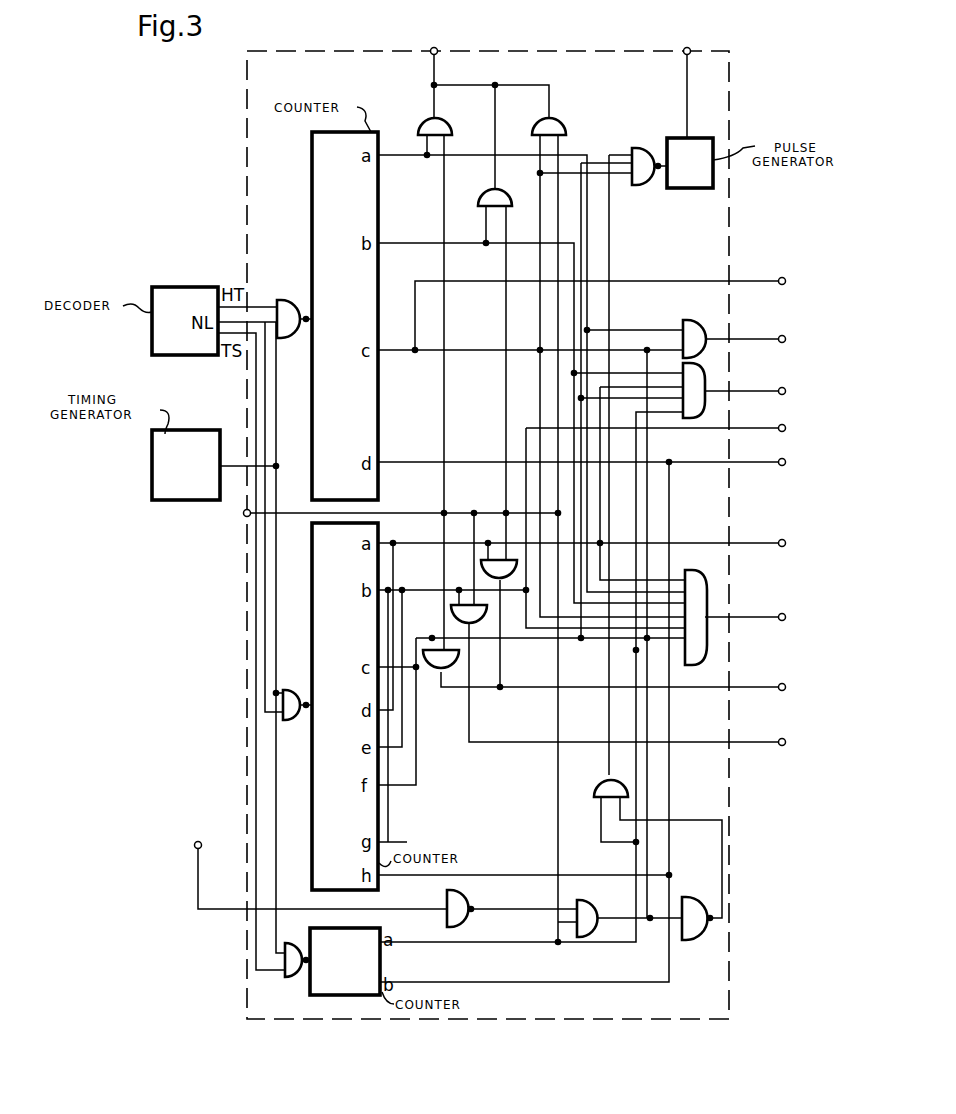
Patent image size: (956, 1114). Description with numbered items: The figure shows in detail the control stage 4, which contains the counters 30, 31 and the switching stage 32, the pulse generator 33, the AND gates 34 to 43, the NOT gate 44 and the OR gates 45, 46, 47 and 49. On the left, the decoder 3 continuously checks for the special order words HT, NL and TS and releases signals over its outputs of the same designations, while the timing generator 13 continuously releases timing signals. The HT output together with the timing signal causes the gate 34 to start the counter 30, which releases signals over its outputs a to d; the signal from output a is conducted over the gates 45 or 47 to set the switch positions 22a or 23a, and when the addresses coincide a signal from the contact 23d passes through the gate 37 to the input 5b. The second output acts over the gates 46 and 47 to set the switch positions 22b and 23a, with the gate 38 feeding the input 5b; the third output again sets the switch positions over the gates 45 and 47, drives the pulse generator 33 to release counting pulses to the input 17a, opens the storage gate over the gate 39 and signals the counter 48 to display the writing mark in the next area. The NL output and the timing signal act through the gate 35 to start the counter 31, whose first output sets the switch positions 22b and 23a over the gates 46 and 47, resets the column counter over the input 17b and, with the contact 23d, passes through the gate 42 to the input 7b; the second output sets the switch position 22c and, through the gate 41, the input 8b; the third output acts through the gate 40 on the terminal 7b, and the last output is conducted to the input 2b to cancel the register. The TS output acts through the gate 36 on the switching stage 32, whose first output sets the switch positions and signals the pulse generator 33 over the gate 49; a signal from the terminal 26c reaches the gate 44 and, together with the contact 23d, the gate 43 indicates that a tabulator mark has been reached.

The decoder 3 is at (185, 309).
The control stage 4 is at (729, 95).
The timing generator 13 is at (186, 465).
The counter 30 is at (345, 316).
The counter 31 is at (345, 706).
The switching stage 32 is at (345, 961).
The pulse generator 33 is at (690, 163).
The AND gate 34 is at (285, 308).
The AND gate 35 is at (290, 693).
The AND gate 36 is at (286, 974).
The AND gate 37 is at (447, 127).
The AND gate 38 is at (507, 198).
The AND gate 39 is at (561, 127).
The AND gate 40 is at (456, 660).
The AND gate 41 is at (486, 614).
The AND gate 42 is at (497, 556).
The AND gate 43 is at (599, 905).
The NOT gate 44 is at (471, 917).
The OR gate 45 is at (691, 328).
The OR gate 46 is at (704, 390).
The OR gate 47 is at (702, 609).
The counter 48 is at (796, 282).
The OR gate 49 is at (638, 156).
The input 5b is at (437, 39).
The input of counter 17 17a is at (690, 39).
The input of counter 17 17b is at (802, 544).
The switch position 22a is at (802, 340).
The switch position 22b is at (802, 393).
The switch position 22c is at (801, 429).
The input 2b is at (796, 463).
The switch position 23a is at (802, 618).
The contact 23d is at (228, 515).
The terminal 26c is at (177, 846).
The input 7b is at (796, 688).
The input 8b is at (796, 743).